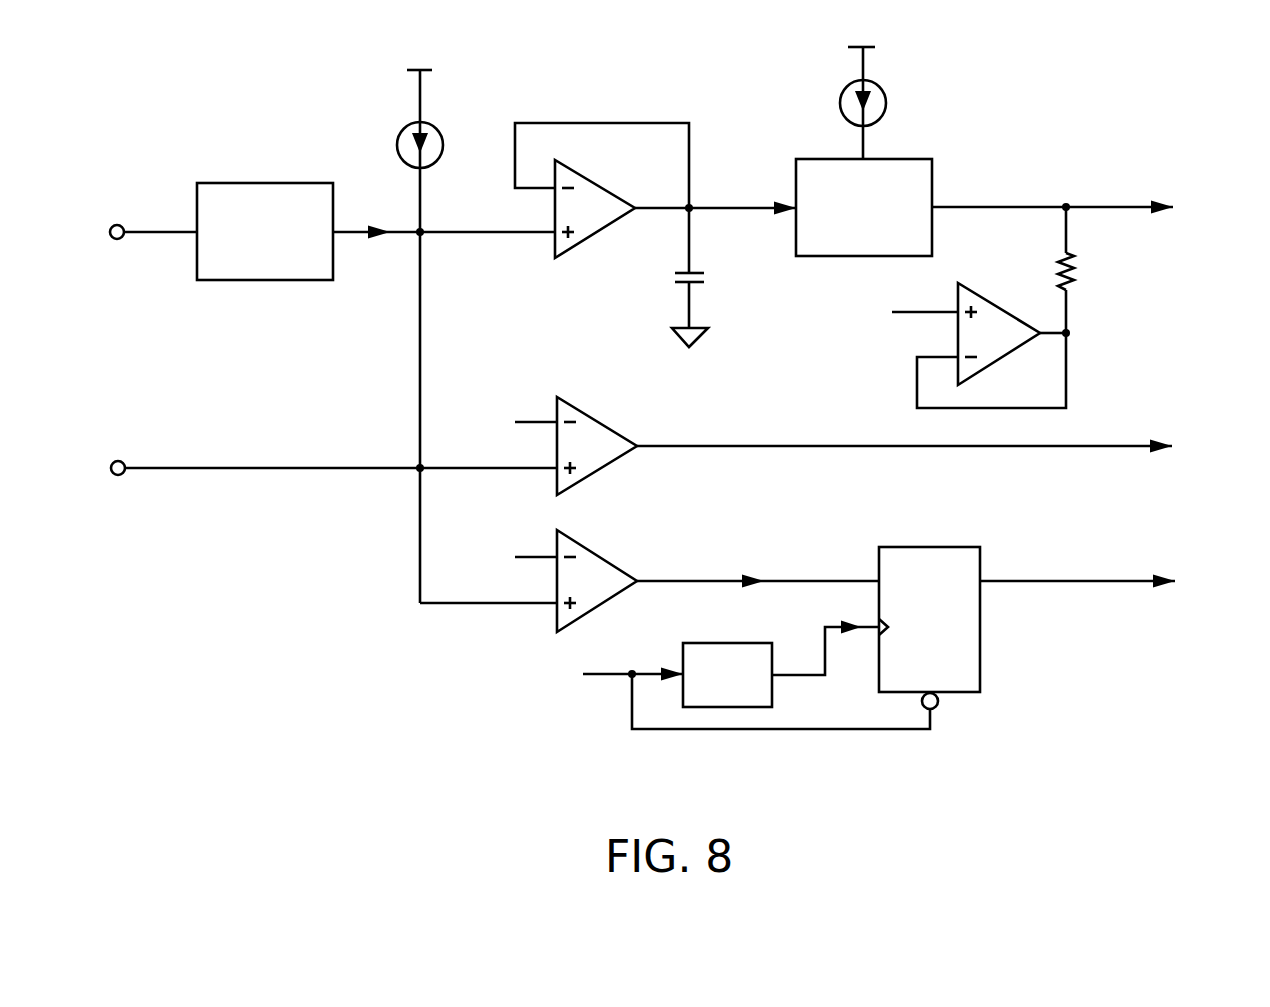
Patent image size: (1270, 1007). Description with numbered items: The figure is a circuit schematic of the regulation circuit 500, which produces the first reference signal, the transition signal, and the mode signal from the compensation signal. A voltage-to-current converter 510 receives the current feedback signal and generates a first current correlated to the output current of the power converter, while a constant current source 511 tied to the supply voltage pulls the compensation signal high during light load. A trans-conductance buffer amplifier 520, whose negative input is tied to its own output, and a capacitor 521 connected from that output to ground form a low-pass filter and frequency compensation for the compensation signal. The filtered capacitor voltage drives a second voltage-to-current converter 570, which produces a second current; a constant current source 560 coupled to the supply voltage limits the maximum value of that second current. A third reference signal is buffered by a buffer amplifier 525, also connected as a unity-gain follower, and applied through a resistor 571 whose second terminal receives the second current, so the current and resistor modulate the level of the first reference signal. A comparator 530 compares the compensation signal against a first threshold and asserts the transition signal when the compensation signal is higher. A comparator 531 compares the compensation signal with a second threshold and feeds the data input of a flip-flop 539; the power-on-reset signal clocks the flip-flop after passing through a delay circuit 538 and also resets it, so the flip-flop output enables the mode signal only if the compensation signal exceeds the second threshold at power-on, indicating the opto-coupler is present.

The regulation circuit 500 is at (1244, 88).
The voltage-to-current converter 510 is at (268, 216).
The constant current source 511 is at (449, 145).
The trans-conductance buffer amplifier 520 is at (602, 198).
The capacitor 521 is at (718, 277).
The buffer amplifier 525 is at (991, 340).
The comparator 530 is at (600, 440).
The comparator 531 is at (600, 575).
The delay circuit 538 is at (730, 659).
The flip-flop 539 is at (933, 612).
The constant current source 560 is at (835, 103).
The voltage-to-current converter 570 is at (869, 192).
The resistor 571 is at (1095, 270).